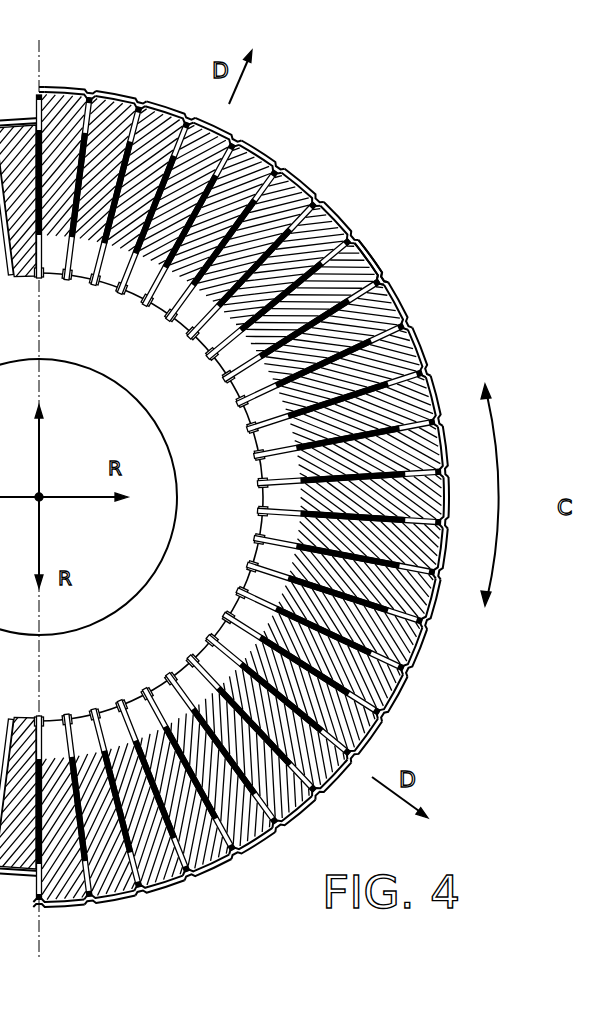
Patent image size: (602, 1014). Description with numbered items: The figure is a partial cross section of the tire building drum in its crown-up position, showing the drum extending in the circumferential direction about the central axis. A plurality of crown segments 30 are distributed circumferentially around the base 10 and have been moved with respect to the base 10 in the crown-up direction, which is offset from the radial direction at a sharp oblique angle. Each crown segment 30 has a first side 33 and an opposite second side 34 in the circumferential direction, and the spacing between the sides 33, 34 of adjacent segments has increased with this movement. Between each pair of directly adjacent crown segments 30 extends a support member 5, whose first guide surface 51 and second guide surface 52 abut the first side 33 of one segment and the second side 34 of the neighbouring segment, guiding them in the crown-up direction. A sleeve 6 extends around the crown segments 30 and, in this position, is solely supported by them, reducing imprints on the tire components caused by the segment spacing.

The support member 5 is at (146, 304).
The sleeve 6 is at (423, 642).
The base 10 is at (154, 580).
The crown segment 30 is at (336, 198).
The first side 33 is at (388, 280).
The second side 34 is at (353, 228).
The first guide surface 51 is at (231, 378).
The second guide surface 52 is at (252, 413).